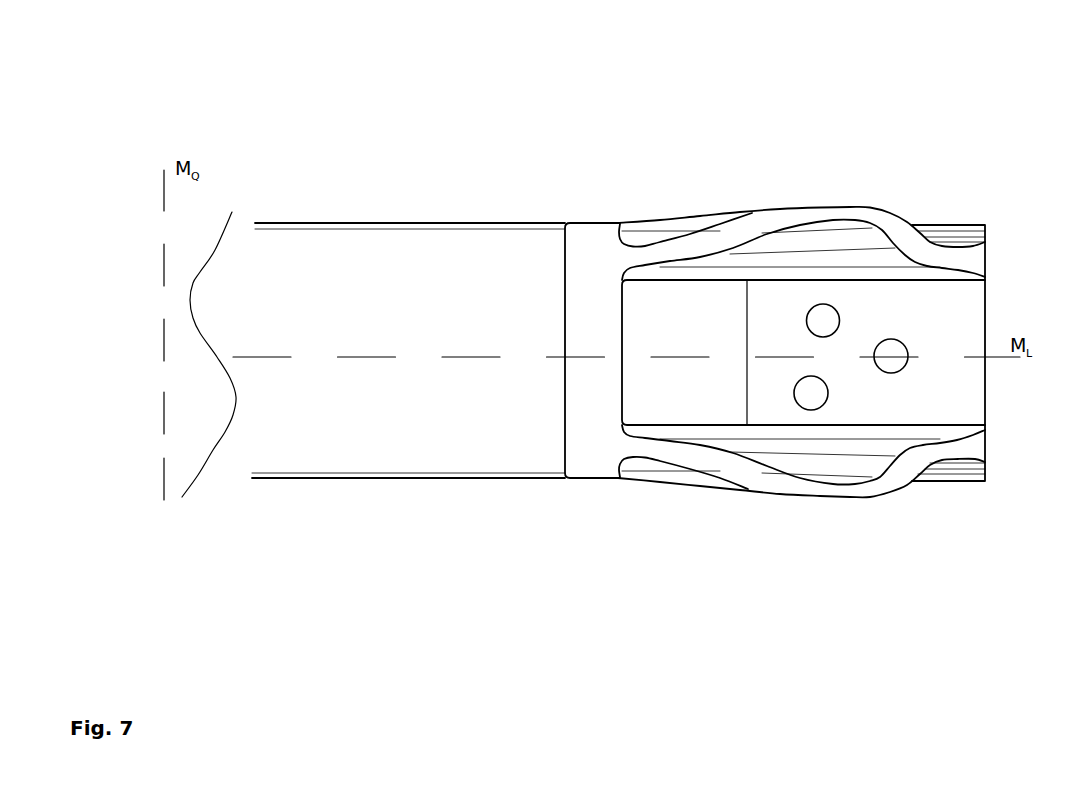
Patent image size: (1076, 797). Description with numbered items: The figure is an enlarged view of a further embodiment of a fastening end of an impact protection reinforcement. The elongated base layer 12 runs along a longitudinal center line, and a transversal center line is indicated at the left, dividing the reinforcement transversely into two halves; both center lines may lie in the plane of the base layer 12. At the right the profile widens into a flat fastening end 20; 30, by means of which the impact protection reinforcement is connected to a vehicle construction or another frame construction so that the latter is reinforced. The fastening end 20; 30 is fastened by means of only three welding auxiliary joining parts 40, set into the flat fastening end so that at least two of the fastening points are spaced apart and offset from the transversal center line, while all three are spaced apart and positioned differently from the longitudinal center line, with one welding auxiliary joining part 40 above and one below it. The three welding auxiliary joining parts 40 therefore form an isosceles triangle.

The base layer 12 is at (433, 432).
The fastening end 20 is at (779, 269).
The fastening end 30 is at (911, 193).
The welding auxiliary joining part 40 is at (805, 375).